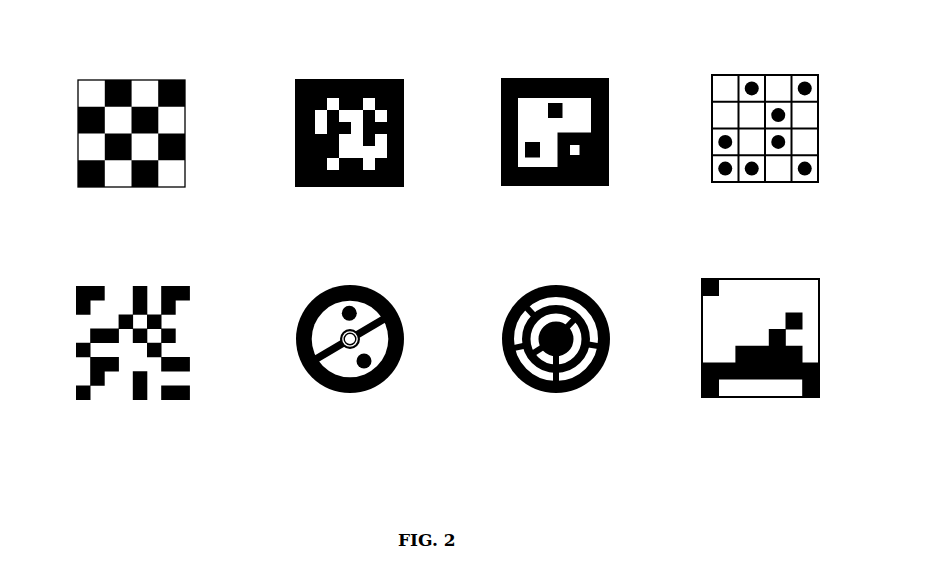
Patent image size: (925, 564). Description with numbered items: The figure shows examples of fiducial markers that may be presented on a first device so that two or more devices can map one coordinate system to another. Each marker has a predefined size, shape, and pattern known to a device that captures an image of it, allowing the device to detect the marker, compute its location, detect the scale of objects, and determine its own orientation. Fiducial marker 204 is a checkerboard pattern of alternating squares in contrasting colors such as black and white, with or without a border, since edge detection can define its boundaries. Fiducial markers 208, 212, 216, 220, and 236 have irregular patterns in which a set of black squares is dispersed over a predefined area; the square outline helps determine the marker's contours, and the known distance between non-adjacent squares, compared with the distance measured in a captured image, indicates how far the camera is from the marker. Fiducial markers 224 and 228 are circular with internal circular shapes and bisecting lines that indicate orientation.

The fiducial marker 204 is at (78, 80).
The fiducial marker 208 is at (295, 79).
The fiducial marker 212 is at (501, 78).
The fiducial marker 216 is at (712, 75).
The fiducial marker 220 is at (76, 286).
The fiducial marker 224 is at (310, 300).
The fiducial marker 228 is at (520, 300).
The fiducial marker 236 is at (703, 280).